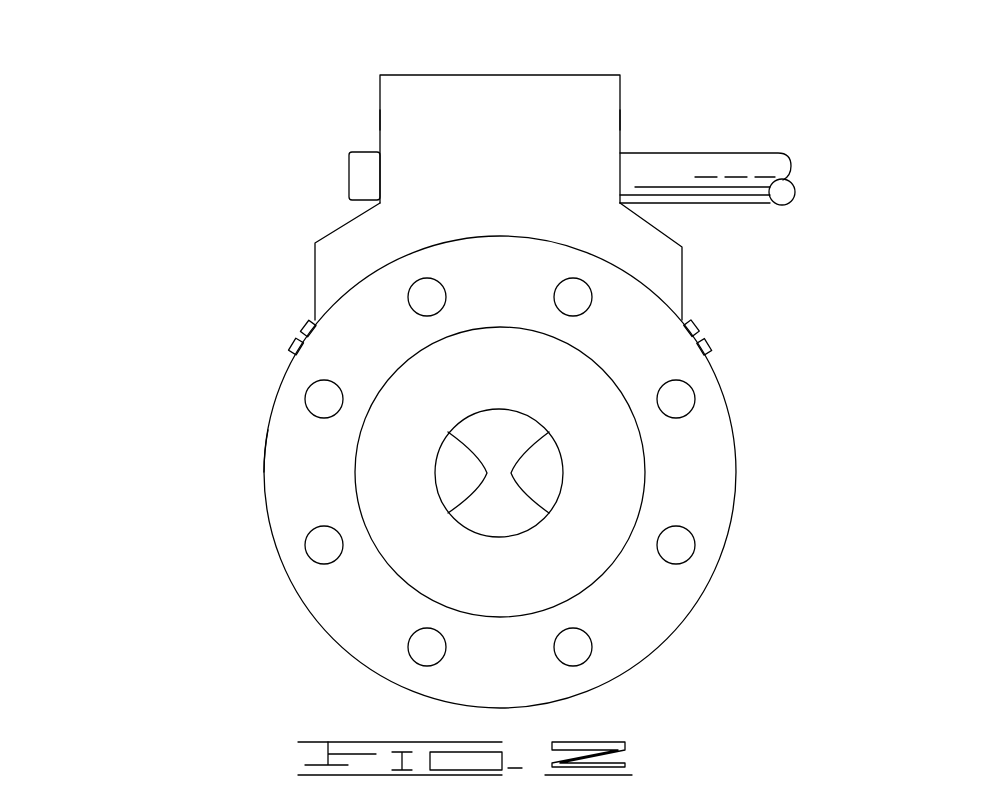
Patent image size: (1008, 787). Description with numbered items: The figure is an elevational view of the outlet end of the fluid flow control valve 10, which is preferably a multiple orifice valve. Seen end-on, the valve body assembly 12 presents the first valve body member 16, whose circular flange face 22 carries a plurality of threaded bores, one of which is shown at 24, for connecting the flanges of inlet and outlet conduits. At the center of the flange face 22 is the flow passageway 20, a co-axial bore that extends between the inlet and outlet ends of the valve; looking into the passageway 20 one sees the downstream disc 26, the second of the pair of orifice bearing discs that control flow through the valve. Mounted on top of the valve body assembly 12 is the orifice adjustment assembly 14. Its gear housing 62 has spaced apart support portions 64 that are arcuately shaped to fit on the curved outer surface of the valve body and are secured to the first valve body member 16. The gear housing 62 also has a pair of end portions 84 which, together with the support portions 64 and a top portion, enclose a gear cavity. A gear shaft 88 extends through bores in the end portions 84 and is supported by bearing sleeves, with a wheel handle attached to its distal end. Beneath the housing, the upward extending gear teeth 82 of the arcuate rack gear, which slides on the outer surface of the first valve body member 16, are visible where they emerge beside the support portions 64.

The fluid flow control valve 10 is at (172, 69).
The valve body assembly 12 is at (656, 307).
The orifice adjustment assembly 14 is at (602, 62).
The first valve body member 16 is at (720, 423).
The flow passageway 20 is at (557, 477).
The flange face 22 is at (277, 533).
The threaded bore 24 is at (423, 650).
The downstream disc 26 is at (487, 428).
The gear housing 62 is at (509, 161).
The support portions 64 is at (370, 235).
The gear teeth 82 is at (285, 342).
The end portions 84 is at (380, 120).
The gear shaft 88 is at (355, 165).